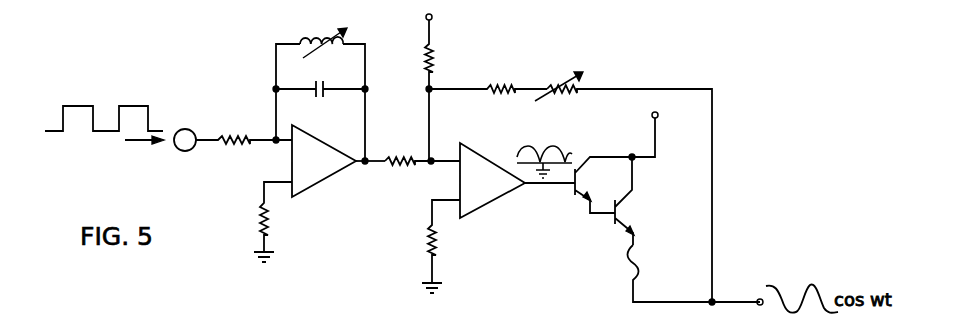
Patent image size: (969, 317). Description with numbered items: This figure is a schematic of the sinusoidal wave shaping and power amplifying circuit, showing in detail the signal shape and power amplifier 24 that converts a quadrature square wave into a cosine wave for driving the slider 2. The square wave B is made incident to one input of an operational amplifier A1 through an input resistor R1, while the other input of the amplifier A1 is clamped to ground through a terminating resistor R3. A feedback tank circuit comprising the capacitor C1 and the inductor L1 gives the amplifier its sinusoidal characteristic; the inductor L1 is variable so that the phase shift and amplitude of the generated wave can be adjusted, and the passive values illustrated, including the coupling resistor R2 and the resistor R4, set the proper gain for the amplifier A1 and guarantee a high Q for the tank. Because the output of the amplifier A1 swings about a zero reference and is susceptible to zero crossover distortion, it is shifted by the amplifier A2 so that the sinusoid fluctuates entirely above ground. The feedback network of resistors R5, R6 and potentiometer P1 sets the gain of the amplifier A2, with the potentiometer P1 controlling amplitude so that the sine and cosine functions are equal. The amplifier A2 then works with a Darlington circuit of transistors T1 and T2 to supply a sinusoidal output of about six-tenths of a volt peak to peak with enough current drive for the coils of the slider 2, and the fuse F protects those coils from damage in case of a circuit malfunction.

The signal shape and power amplifier 24 is at (244, 67).
The slider 2 is at (160, 140).
The square wave B is at (99, 117).
The input resistor R1 is at (244, 140).
The operational amplifier A1 is at (338, 161).
The inductor L1 is at (316, 34).
The capacitor C1 is at (320, 88).
The terminating resistor R3 is at (283, 222).
The coupling resistor R2 is at (422, 151).
The resistor R5 is at (451, 84).
The resistor R6 is at (488, 77).
The potentiometer P1 is at (623, 187).
The amplifier A2 is at (517, 180).
The resistor R4 is at (446, 246).
The transistor T1 is at (638, 159).
The transistor T2 is at (640, 201).
The fuse F is at (696, 275).